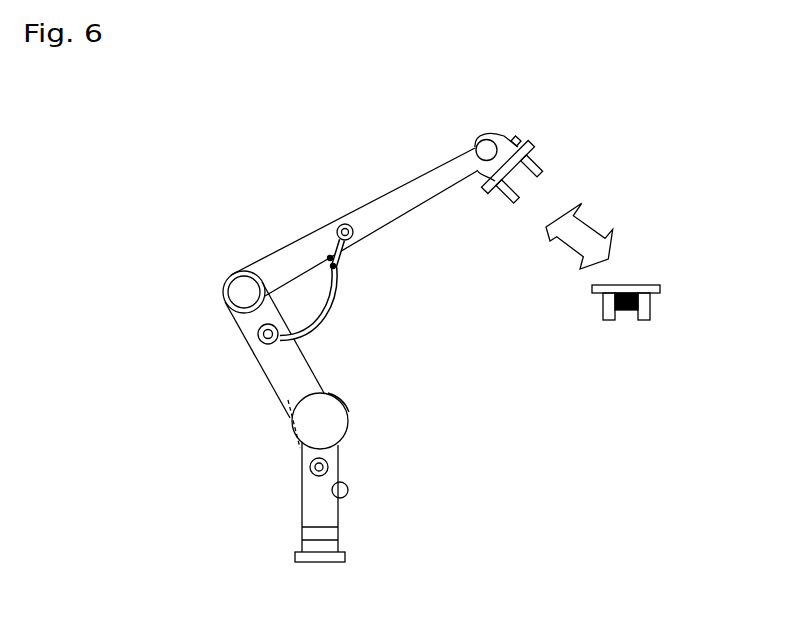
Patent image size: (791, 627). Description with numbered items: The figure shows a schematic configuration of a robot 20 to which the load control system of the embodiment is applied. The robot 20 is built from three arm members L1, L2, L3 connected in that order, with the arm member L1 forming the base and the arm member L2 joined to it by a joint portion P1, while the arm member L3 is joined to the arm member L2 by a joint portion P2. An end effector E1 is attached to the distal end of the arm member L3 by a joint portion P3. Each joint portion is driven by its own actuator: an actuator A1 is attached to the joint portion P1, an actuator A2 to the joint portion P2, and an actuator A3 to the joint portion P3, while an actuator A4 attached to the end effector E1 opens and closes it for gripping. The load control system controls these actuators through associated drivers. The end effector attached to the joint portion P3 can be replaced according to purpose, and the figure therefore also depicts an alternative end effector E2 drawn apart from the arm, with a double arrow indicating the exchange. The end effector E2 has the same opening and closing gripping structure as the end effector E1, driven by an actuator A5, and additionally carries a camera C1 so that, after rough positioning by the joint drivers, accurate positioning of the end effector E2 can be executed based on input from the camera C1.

The robot 20 is at (599, 521).
The arm member L1 is at (302, 522).
The arm member L2 is at (268, 376).
The arm member L3 is at (360, 210).
The joint portion P1 is at (363, 421).
The actuator A1 is at (335, 427).
The joint portion P2 is at (231, 271).
The actuator A2 is at (238, 273).
The joint portion P3 is at (485, 135).
The actuator A3 is at (482, 138).
The end effector E1 is at (570, 175).
The actuator A4 is at (548, 177).
The end effector E2 is at (667, 341).
The actuator A5 is at (667, 341).
The camera C1 is at (646, 320).